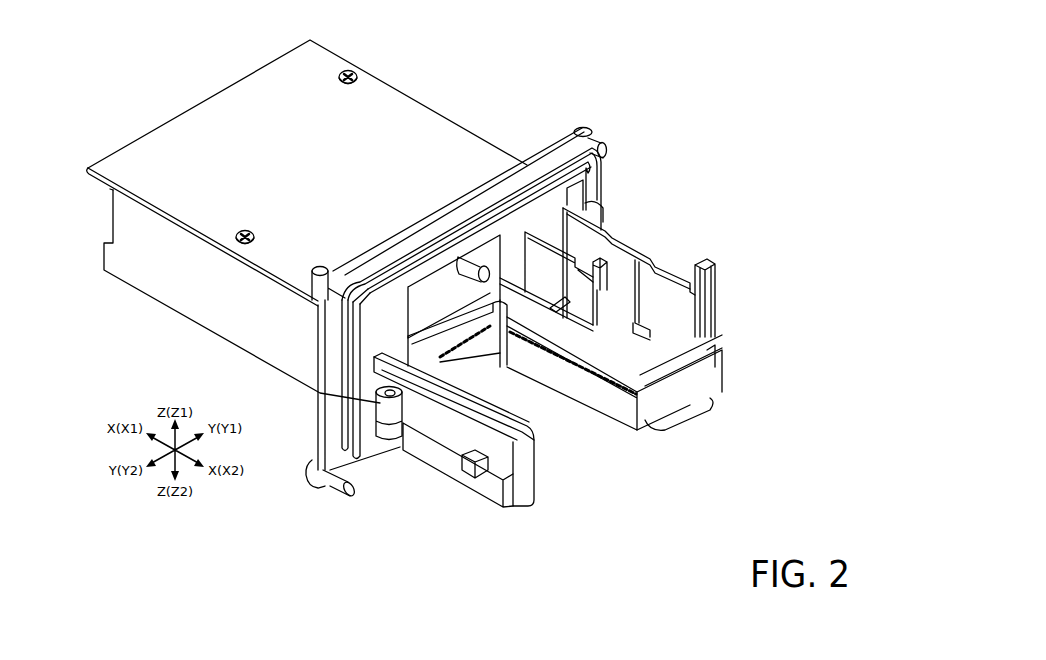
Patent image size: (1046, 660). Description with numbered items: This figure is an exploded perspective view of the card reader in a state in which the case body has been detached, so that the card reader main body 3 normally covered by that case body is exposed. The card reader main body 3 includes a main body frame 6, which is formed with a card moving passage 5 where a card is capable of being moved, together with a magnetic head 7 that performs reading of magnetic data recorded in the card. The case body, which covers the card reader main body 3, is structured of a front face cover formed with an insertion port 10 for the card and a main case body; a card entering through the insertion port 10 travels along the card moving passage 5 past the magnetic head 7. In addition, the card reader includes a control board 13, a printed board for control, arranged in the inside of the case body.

The control board 13 is at (397, 88).
The card reader main body 3 is at (619, 187).
The main body frame 6 is at (637, 240).
The magnetic head 7 is at (678, 385).
The insertion port 10 is at (672, 397).
The card moving passage 5 is at (527, 473).